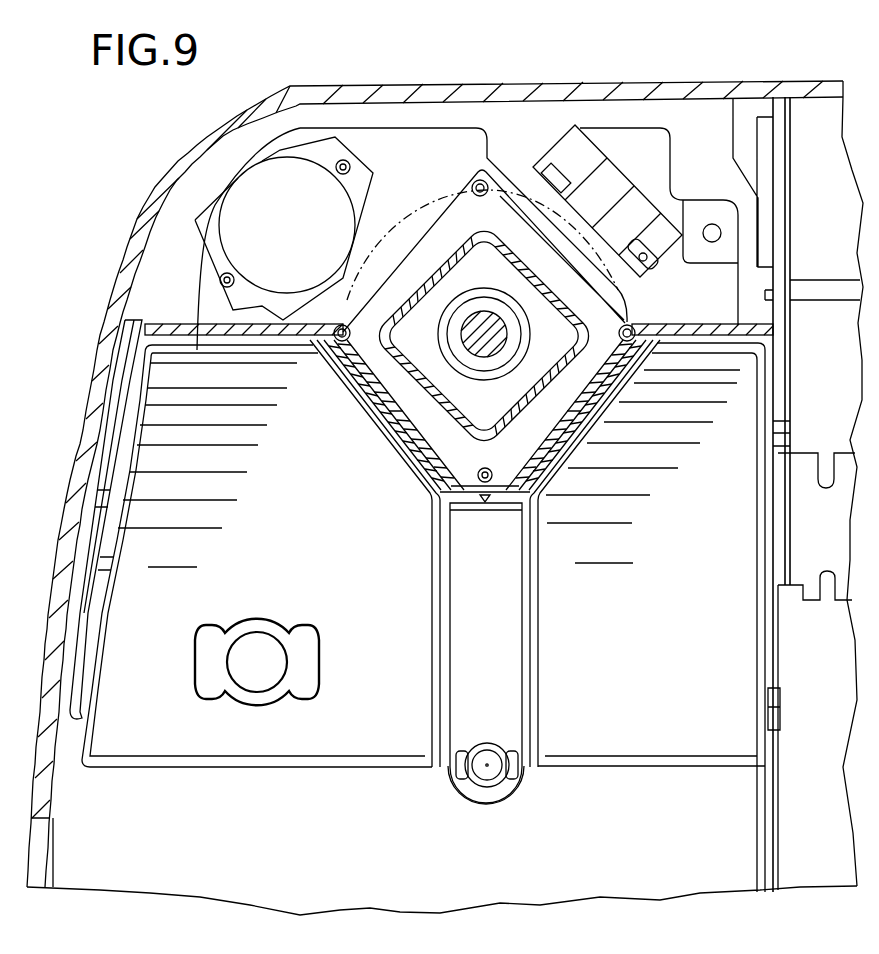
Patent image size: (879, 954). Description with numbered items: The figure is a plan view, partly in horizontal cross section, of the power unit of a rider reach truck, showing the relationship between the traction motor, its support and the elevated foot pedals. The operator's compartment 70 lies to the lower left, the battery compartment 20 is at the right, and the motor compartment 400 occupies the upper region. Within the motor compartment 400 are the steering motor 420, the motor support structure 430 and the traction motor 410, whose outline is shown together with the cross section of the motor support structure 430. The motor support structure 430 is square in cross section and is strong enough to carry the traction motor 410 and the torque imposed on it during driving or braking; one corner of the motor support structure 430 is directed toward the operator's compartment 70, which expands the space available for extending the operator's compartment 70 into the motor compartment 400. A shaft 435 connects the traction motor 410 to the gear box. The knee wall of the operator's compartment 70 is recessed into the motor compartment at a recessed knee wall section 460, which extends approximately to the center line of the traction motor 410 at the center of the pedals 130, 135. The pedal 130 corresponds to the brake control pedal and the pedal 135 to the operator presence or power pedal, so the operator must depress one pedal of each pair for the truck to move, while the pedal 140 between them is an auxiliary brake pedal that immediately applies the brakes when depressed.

The battery compartment 20 is at (837, 650).
The operator's compartment 70 is at (255, 841).
The pedal 130 is at (335, 590).
The pedal 135 is at (666, 660).
The pedal 140 is at (504, 675).
The motor compartment 400 is at (453, 161).
The traction motor 410 is at (450, 180).
The steering motor 420 is at (311, 239).
The motor support structure 430 is at (413, 384).
The shaft 435 is at (483, 320).
The recessed knee wall section 460 is at (183, 322).